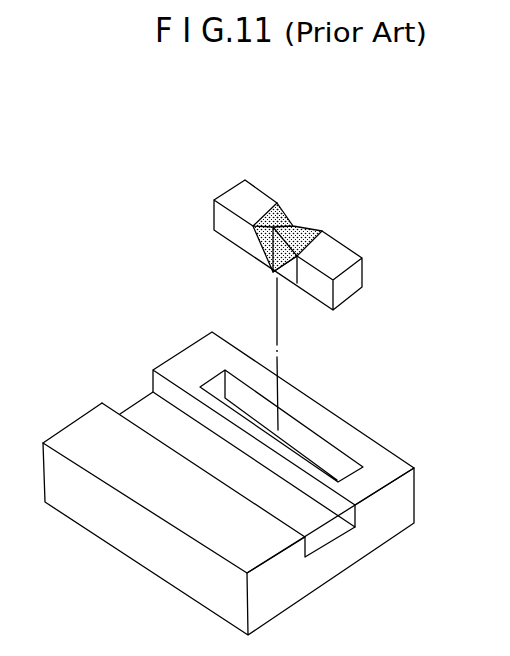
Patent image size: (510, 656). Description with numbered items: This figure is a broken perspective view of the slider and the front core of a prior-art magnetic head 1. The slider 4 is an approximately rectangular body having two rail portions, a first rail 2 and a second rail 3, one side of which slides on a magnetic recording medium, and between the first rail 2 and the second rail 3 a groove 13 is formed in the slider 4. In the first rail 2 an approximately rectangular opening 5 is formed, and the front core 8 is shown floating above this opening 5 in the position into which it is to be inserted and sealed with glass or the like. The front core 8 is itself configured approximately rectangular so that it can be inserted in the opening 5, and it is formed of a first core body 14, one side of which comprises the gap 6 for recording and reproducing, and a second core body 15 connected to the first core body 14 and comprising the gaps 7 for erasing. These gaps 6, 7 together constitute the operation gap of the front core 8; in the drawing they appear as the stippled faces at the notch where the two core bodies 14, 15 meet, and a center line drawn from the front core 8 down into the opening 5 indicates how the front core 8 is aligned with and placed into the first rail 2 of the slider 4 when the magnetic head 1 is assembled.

The magnetic head 1 is at (428, 160).
The first rail 2 is at (180, 366).
The second rail 3 is at (88, 440).
The slider 4 is at (405, 438).
The opening 5 is at (313, 444).
The gap for recording and reproducing 6 is at (293, 207).
The gap for erasing 7 is at (306, 236).
The front core 8 is at (373, 197).
The groove 13 is at (148, 412).
The first core body 14 is at (258, 173).
The second core body 15 is at (367, 251).